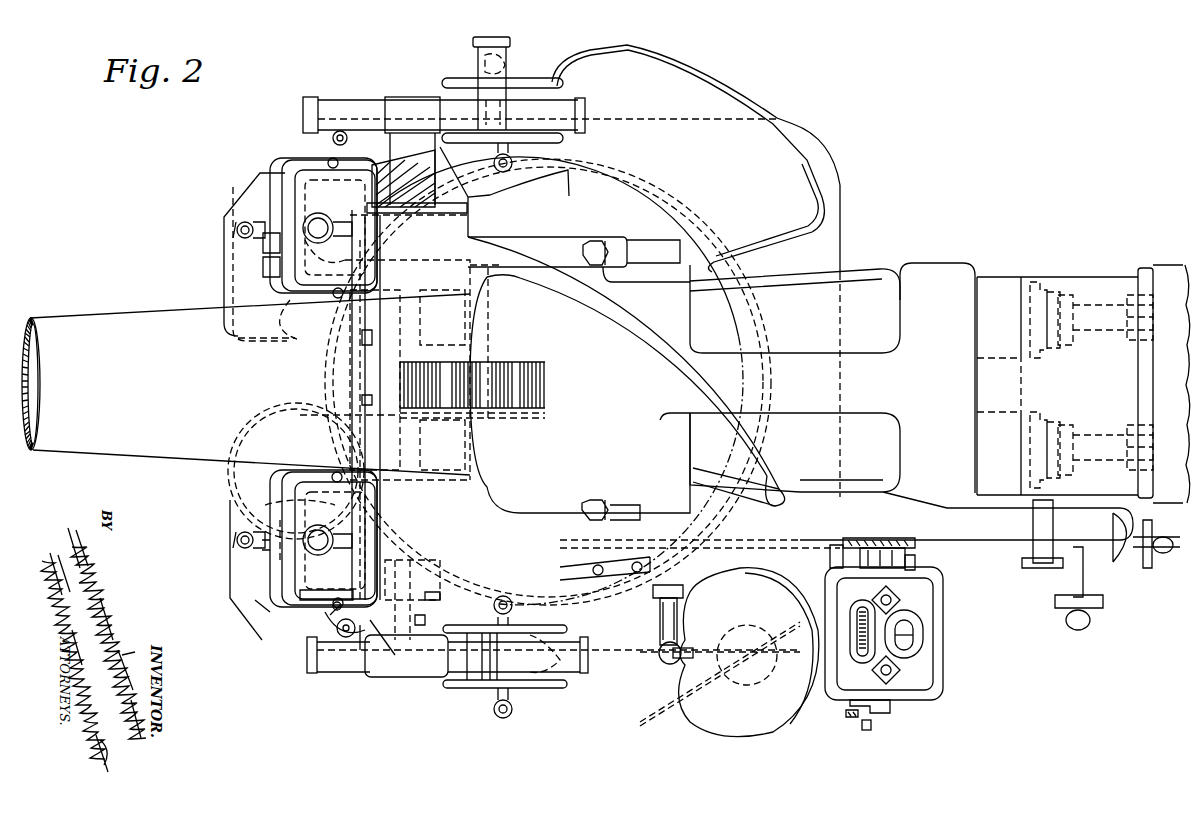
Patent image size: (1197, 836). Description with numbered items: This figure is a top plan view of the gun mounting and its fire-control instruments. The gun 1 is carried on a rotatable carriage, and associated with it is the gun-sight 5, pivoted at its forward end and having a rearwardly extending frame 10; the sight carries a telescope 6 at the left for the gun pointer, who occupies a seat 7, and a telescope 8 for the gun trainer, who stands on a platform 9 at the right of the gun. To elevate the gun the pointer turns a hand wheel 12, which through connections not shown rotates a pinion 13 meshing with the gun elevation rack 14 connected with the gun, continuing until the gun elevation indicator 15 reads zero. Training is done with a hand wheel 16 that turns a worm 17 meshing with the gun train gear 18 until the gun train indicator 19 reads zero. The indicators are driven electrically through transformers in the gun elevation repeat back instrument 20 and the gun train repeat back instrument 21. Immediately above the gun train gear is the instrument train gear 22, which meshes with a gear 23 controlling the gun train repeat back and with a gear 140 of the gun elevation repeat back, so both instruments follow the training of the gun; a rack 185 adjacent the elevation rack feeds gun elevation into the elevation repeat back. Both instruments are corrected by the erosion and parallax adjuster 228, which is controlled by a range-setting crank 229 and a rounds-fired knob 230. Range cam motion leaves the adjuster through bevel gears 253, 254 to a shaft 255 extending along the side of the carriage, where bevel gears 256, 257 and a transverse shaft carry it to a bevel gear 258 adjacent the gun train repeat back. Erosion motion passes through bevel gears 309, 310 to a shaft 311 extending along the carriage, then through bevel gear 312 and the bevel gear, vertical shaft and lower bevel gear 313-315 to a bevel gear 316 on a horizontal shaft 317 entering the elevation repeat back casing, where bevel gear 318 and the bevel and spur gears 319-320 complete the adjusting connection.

The gun 1 is at (156, 322).
The gun-sight 5 is at (465, 222).
The telescope 6 is at (345, 660).
The seat 7 is at (763, 712).
The telescope 8 is at (340, 110).
The platform 9 is at (703, 95).
The frame 10 is at (702, 470).
The hand wheel 12 is at (560, 690).
The pinion 13 is at (448, 380).
The gun elevation rack 14 is at (525, 374).
The gun elevation indicator 15 is at (268, 498).
The hand wheel 16 is at (552, 140).
The worm 17 is at (407, 165).
The gun train gear 18 is at (772, 385).
The gun train indicator 19 is at (305, 193).
The gun elevation repeat back instrument 20 is at (250, 580).
The gun train repeat back instrument 21 is at (248, 203).
The instrument train gear 22 is at (332, 380).
The gear 23 is at (292, 328).
The gear 140 is at (248, 433).
The rack 185 is at (500, 418).
The erosion and parallax adjuster 228 is at (956, 664).
The range-setting crank 229 is at (873, 725).
The rounds-fired knob 230 is at (850, 718).
The bevel gear 253 is at (910, 549).
The bevel gear 254 is at (913, 562).
The shaft 255 is at (905, 538).
The bevel gear 256 is at (396, 502).
The bevel gear 257 is at (425, 589).
The bevel gear 258 is at (370, 329).
The bevel gear 309 is at (885, 546).
The bevel gear 310 is at (853, 540).
The shaft 311 is at (765, 562).
The bevel gear 312 is at (385, 648).
The bevel gear, vertical shaft and bevel gear 313-315 is at (368, 645).
The bevel gear 316 is at (338, 620).
The horizontal shaft 317 is at (318, 592).
The bevel gear 318 is at (247, 612).
The bevel gear and spur gear 319-320 is at (262, 545).